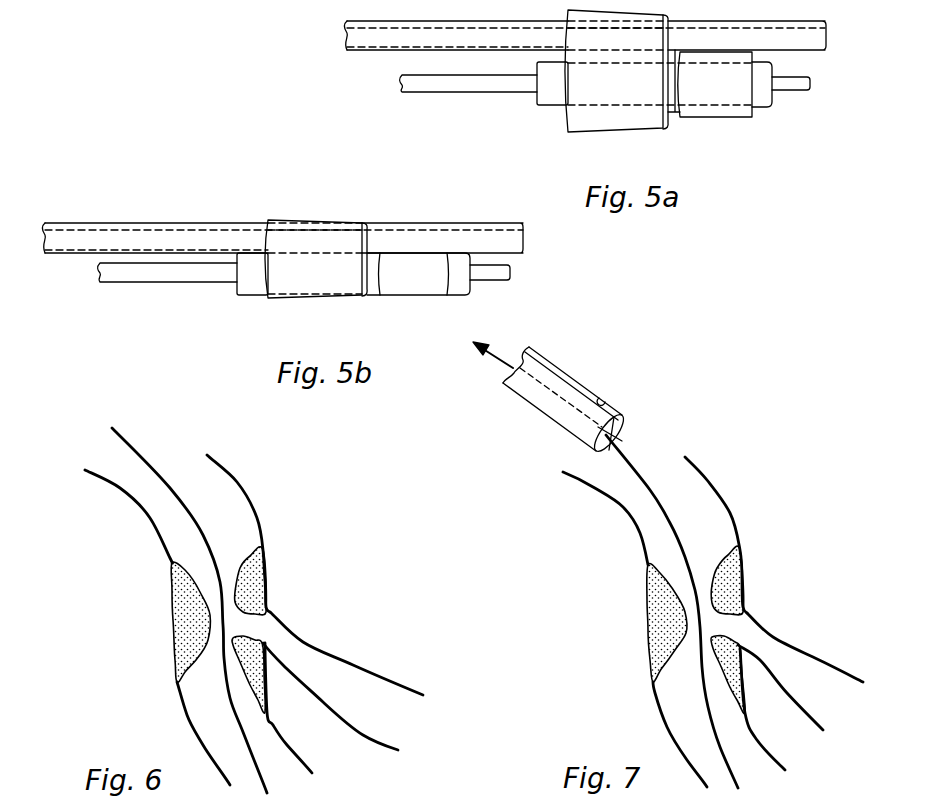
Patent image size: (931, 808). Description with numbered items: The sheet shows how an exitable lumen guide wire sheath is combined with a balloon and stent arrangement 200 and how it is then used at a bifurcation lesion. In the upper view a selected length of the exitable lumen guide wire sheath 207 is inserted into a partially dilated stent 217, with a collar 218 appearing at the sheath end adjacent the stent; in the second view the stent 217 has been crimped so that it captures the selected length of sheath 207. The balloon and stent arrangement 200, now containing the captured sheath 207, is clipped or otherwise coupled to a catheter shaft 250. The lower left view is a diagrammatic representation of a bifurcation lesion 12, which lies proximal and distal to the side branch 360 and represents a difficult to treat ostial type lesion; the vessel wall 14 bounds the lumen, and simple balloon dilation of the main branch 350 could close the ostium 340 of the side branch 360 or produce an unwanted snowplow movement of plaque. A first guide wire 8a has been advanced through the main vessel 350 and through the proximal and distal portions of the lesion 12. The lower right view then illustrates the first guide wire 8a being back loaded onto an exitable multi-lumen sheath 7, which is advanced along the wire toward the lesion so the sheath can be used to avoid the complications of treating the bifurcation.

In FIG. 5A, the exitable lumen guide wire sheath 207 is at (362, 51).
In FIG. 5B, the exitable lumen guide wire sheath 207 is at (83, 254).
In FIG. 5A, the balloon and stent arrangement 200 is at (531, 118).
In FIG. 5B, the balloon and stent arrangement 200 is at (225, 312).
In FIG. 5A, the collar 218 is at (558, 106).
In FIG. 5B, the collar 218 is at (256, 297).
In FIG. 5A, the stent 217 is at (623, 131).
In FIG. 5B, the stent 217 is at (276, 220).
In FIG. 5A, the catheter shaft 250 is at (790, 91).
In FIG. 5B, the catheter shaft 250 is at (505, 281).
In FIG. 6, the first guide wire 8a is at (152, 457).
In FIG. 7, the first guide wire 8a is at (653, 490).
In FIG. 6, the main branch 350 is at (178, 531).
In FIG. 6, the vessel wall 14 is at (227, 500).
In FIG. 7, the vessel wall 14 is at (688, 480).
In FIG. 6, the bifurcation lesion 12 is at (183, 633).
In FIG. 7, the bifurcation lesion 12 is at (696, 630).
In FIG. 6, the ostium 340 is at (262, 623).
In FIG. 6, the side branch 360 is at (333, 672).
In FIG. 7, the exitable multi-lumen sheath 7 is at (597, 387).